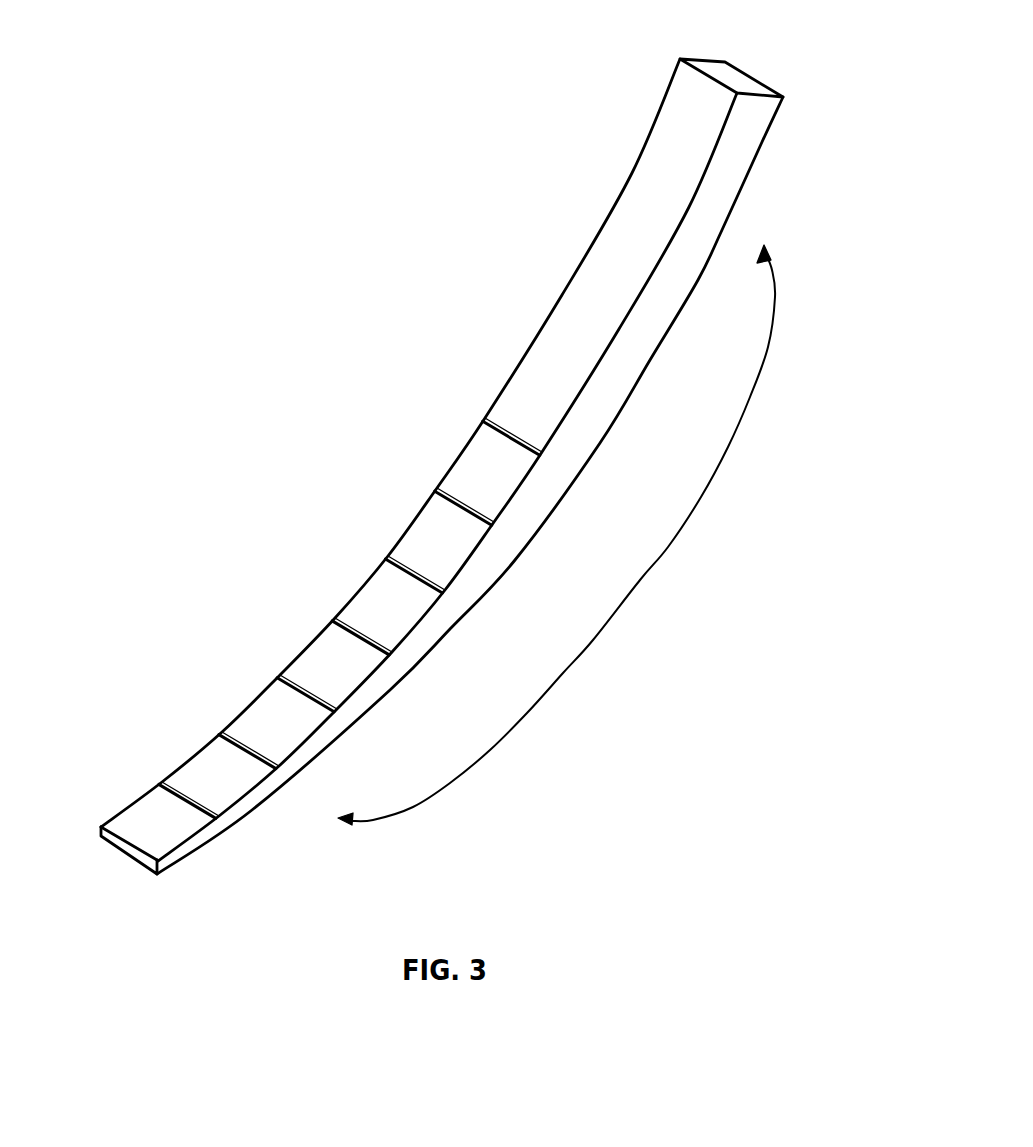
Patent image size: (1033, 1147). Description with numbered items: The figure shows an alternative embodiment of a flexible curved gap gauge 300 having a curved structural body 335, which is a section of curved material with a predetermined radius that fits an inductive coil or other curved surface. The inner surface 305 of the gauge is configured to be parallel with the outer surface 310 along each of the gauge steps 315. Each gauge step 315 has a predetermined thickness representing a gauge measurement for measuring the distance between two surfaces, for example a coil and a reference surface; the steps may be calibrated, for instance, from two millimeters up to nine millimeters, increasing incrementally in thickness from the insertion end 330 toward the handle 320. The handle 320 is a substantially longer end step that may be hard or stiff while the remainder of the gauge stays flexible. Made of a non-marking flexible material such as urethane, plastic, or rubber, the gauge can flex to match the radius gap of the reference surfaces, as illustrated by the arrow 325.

The flexible curved gap gauge 300 is at (264, 196).
The inner surface 305 is at (523, 355).
The outer surface 310 is at (765, 142).
The gauge steps 315 is at (513, 404).
The handle 320 is at (658, 179).
The arrow 325 is at (634, 592).
The insertion end 330 is at (130, 862).
The curved structural body 335 is at (731, 77).